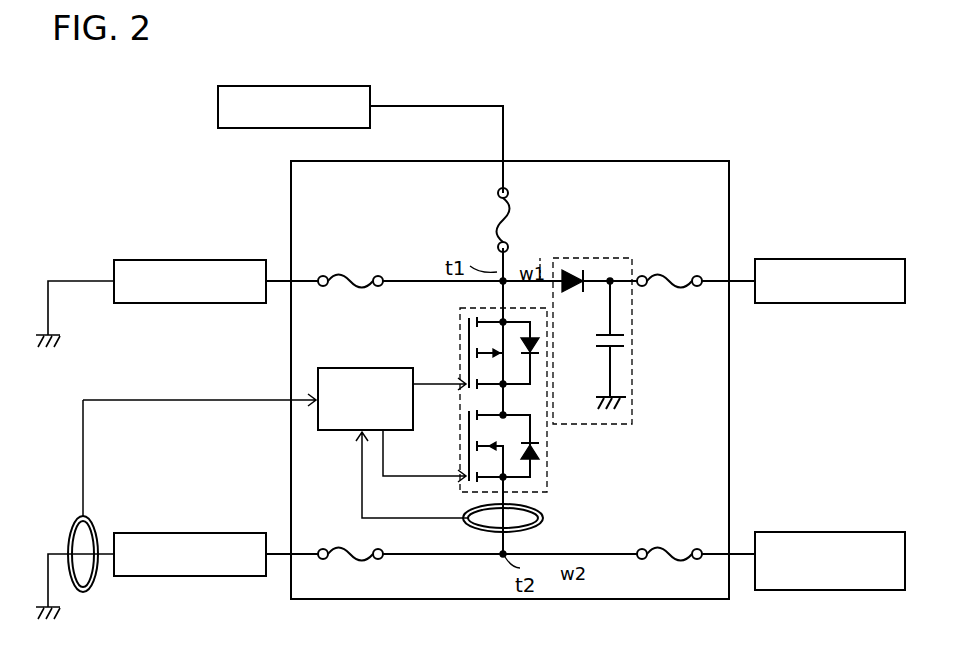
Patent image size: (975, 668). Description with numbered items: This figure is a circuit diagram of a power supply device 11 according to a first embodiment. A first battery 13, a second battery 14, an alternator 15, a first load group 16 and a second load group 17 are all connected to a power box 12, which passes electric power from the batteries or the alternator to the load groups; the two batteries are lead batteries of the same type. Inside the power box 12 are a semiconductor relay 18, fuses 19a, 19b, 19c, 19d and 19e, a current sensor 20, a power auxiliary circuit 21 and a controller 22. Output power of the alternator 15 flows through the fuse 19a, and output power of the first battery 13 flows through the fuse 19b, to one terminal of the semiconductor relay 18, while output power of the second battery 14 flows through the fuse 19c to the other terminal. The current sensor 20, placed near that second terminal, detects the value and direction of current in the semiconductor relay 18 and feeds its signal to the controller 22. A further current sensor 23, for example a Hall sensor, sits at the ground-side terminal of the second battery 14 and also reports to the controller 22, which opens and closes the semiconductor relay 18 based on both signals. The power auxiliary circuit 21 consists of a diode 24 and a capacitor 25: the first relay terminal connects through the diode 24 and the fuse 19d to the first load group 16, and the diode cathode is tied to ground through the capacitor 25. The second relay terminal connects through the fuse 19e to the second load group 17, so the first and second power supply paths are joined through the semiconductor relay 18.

The power supply device 11 is at (773, 110).
The power box 12 is at (666, 160).
The first battery 13 is at (205, 259).
The second battery 14 is at (205, 533).
The alternator 15 is at (311, 86).
The first load group 16 is at (845, 259).
The second load group 17 is at (845, 533).
The semiconductor relay 18 is at (547, 452).
The fuse 19a is at (509, 224).
The fuse 19b is at (356, 276).
The fuse 19c is at (350, 559).
The fuse 19d is at (672, 276).
The fuse 19e is at (672, 560).
The current sensor 20 is at (546, 518).
The power auxiliary circuit 21 is at (615, 329).
The controller 22 is at (348, 369).
The current sensor 23 is at (95, 510).
The diode 24 is at (573, 293).
The capacitor 25 is at (616, 332).